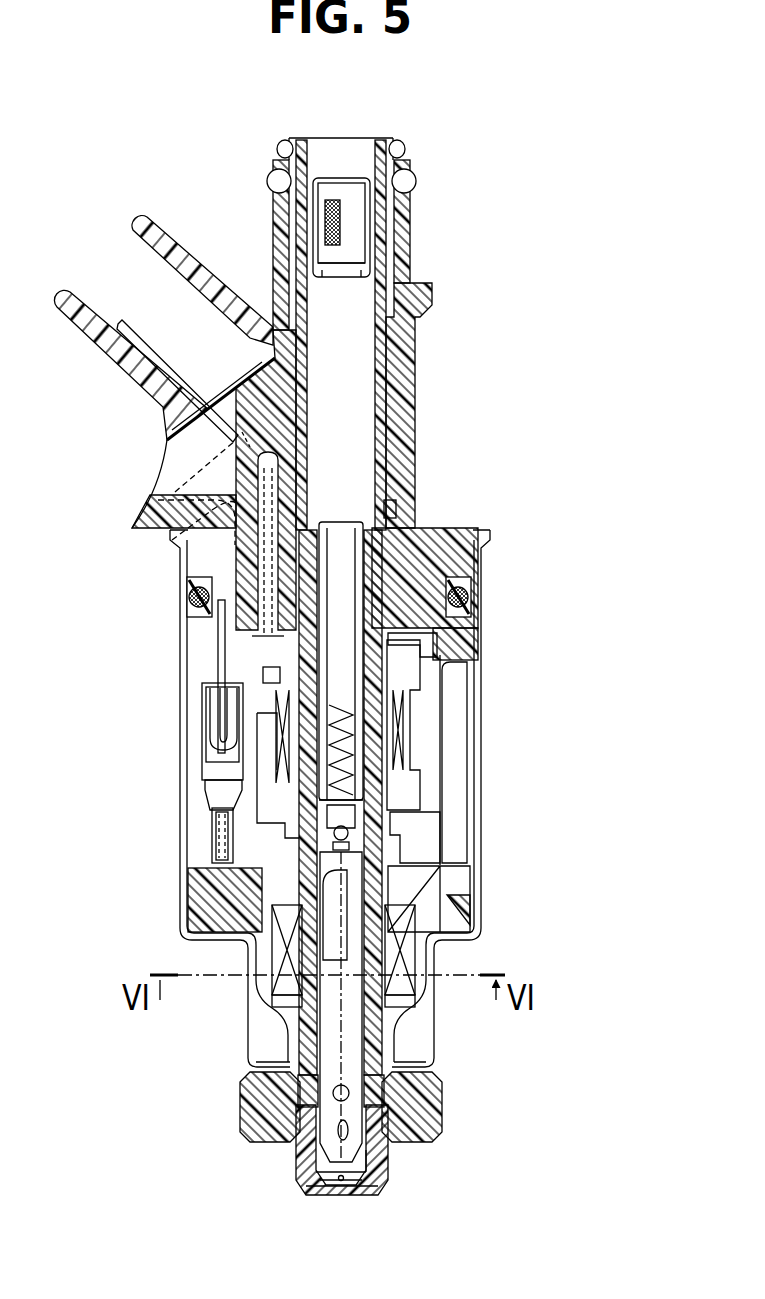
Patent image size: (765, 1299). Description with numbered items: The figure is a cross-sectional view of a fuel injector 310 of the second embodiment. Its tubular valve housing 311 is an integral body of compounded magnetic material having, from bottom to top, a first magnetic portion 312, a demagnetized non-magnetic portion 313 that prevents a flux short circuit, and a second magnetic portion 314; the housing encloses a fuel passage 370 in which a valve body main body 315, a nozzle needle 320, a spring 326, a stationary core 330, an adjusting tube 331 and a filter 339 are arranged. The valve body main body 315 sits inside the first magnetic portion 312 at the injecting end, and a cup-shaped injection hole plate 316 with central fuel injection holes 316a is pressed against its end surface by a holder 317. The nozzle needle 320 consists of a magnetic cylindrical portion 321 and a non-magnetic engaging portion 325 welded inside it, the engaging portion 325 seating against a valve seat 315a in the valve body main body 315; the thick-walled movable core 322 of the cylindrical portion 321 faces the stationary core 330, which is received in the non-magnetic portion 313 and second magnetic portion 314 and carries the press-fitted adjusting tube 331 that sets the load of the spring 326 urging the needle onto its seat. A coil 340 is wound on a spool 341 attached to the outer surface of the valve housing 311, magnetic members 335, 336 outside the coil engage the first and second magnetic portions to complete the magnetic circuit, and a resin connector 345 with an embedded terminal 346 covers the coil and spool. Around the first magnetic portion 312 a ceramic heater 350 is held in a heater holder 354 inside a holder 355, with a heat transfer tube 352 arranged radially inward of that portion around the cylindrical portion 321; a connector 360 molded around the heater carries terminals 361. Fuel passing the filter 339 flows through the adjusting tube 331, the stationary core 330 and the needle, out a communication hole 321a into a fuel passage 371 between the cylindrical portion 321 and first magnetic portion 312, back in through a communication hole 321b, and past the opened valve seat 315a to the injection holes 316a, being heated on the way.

The fuel injector 310 is at (412, 270).
The valve housing 311 is at (395, 466).
The first magnetic portion 312 is at (400, 1098).
The non-magnetic portion 313 is at (395, 768).
The second magnetic portion 314 is at (396, 510).
The valve body main body 315 is at (295, 1152).
The valve seat 315a is at (378, 1158).
The injection hole plate 316 is at (318, 1192).
The fuel injection holes 316a is at (352, 1190).
The holder 317 is at (300, 1176).
The nozzle needle 320 is at (212, 893).
The cylindrical portion 321 is at (322, 898).
The communication hole 321a is at (350, 1093).
The communication hole 321b is at (350, 1130).
The movable core 322 is at (250, 822).
The engaging portion 325 is at (336, 1192).
The spring 326 is at (250, 780).
The stationary core 330 is at (475, 546).
The adjusting tube 331 is at (422, 636).
The magnetic member 335 is at (410, 817).
The magnetic member 336 is at (435, 645).
The filter 339 is at (352, 233).
The coil 340 is at (402, 690).
The spool 341 is at (266, 673).
The connector 345 is at (166, 442).
The terminal 346 is at (134, 327).
The ceramic heater 350 is at (418, 950).
The heat transfer tube 352 is at (270, 1000).
The heater holder 354 is at (394, 1008).
The holder 355 is at (256, 1038).
The connector 360 is at (205, 915).
The terminals 361 is at (220, 684).
The fuel passage 370 is at (357, 372).
The fuel passage 371 is at (294, 1105).